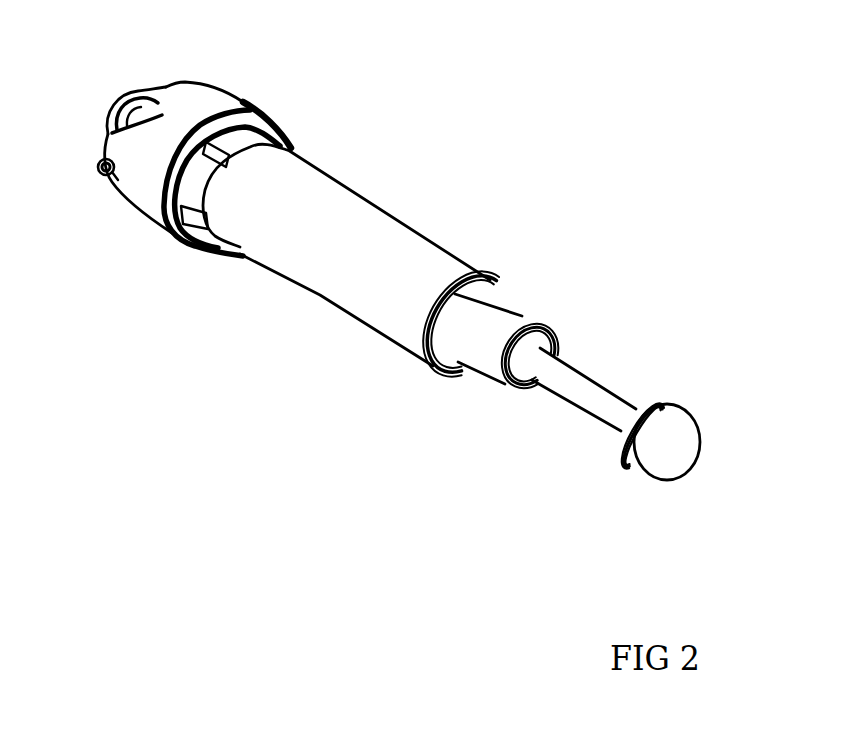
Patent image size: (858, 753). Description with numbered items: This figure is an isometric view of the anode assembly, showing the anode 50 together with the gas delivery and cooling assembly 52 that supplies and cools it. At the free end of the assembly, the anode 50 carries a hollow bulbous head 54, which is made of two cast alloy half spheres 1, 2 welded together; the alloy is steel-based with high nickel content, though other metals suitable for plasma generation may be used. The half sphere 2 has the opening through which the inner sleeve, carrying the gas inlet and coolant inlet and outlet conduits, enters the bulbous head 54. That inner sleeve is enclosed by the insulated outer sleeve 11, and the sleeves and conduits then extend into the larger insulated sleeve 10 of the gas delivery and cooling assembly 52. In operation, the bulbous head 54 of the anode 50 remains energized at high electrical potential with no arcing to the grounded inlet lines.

The anode 50 is at (616, 242).
The gas delivery and cooling assembly 52 is at (406, 163).
The hollow bulbous head 54 is at (694, 423).
The insulated sleeve 10 is at (519, 316).
The insulated outer sleeve 11 is at (586, 374).
The half sphere 2 is at (622, 447).
The half sphere 1 is at (665, 454).